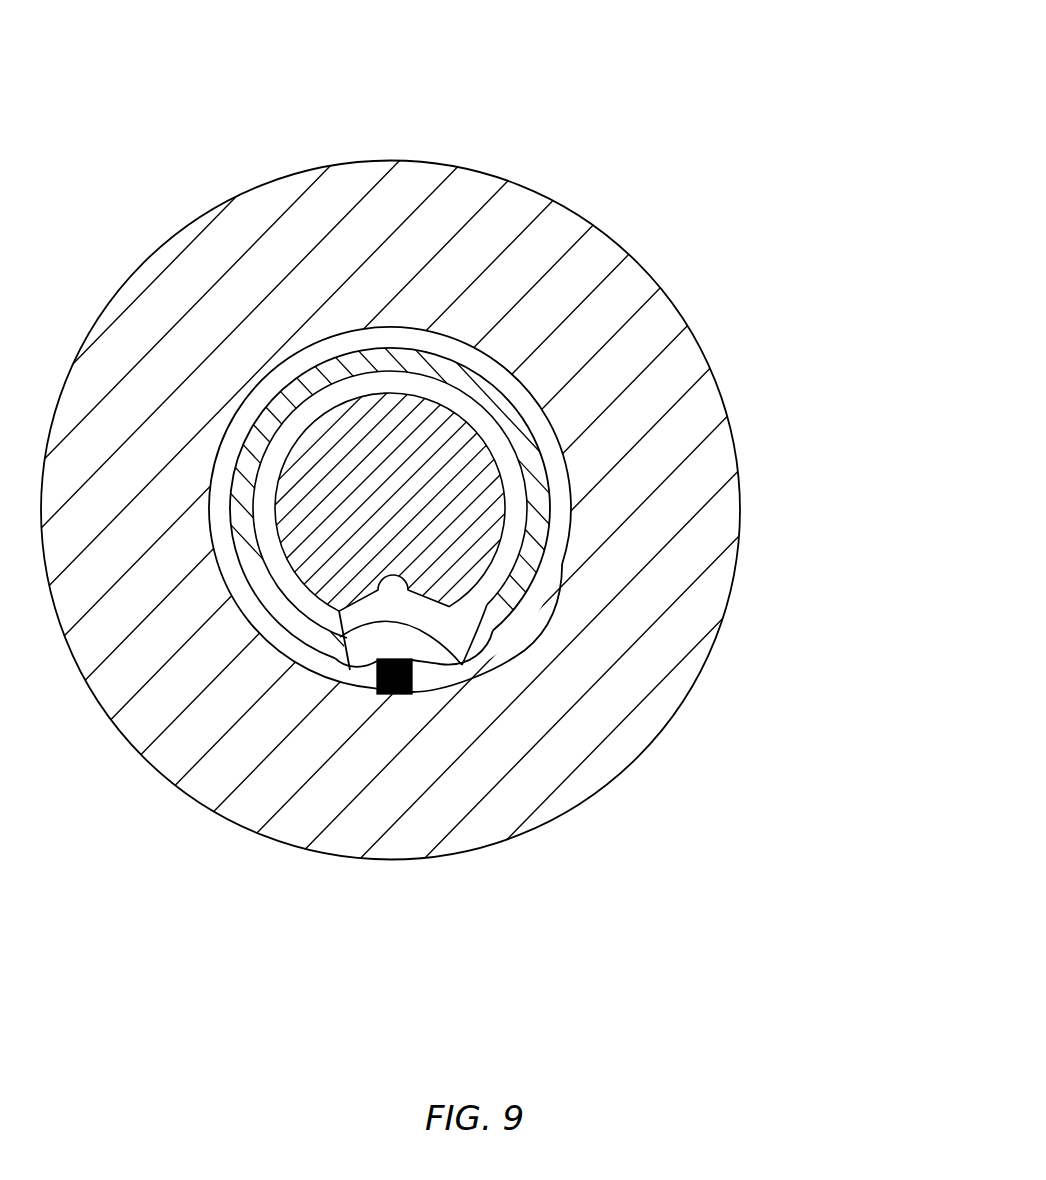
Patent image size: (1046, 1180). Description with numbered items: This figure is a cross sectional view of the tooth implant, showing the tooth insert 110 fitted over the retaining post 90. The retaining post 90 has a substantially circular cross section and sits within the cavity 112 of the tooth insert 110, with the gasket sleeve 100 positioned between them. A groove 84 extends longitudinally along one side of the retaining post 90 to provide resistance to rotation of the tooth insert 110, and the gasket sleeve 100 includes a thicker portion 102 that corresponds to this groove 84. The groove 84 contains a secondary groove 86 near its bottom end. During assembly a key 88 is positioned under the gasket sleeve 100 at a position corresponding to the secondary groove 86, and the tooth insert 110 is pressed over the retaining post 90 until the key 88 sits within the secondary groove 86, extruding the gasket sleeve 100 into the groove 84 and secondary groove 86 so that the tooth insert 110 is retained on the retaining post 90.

The tooth insert 110 is at (617, 238).
The gasket sleeve 100 is at (397, 345).
The cavity 112 is at (553, 416).
The retaining post 90 is at (472, 497).
The secondary groove 86 is at (400, 638).
The key 88 is at (392, 690).
The groove 84 is at (350, 670).
The thicker portion 102 is at (395, 582).